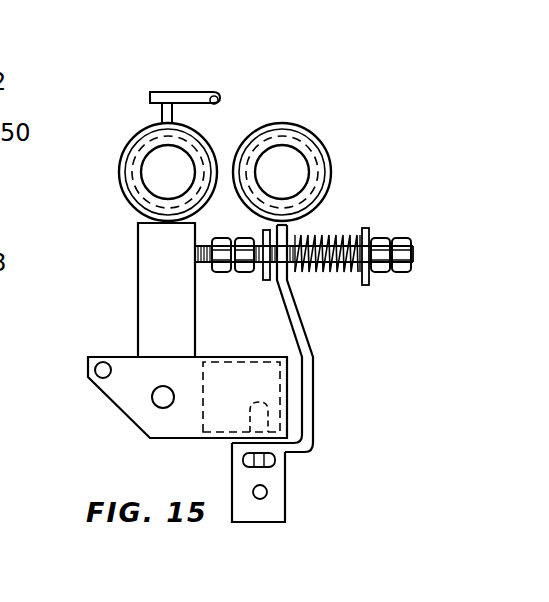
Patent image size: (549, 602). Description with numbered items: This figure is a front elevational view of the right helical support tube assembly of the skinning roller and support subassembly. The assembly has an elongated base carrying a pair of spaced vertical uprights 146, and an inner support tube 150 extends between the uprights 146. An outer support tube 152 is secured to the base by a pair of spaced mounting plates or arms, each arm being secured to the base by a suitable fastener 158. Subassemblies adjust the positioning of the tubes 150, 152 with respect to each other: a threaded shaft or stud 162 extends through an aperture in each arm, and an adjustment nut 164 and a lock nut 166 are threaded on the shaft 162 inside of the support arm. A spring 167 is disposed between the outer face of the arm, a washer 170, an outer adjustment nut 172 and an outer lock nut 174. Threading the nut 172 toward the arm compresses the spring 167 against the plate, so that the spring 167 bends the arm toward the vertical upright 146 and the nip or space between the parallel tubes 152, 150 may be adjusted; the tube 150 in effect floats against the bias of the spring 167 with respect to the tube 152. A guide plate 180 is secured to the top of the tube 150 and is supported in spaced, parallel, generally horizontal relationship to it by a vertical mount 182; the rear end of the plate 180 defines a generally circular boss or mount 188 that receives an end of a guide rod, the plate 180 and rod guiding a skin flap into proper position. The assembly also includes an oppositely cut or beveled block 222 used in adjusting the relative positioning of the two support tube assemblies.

The vertical upright 146 is at (137, 265).
The inner support tube 150 is at (126, 158).
The outer support tube 152 is at (319, 138).
The fastener 158 is at (262, 466).
The threaded shaft 162 is at (202, 270).
The adjustment nut 164 is at (240, 268).
The lock nut 166 is at (233, 228).
The spring 167 is at (323, 233).
The washer 170 is at (364, 228).
The adjustment nut 172 is at (377, 270).
The lock nut 174 is at (414, 272).
The guide plate 180 is at (186, 87).
The vertical mount 182 is at (162, 117).
The circular boss 188 is at (218, 108).
The beveled block 222 is at (118, 410).